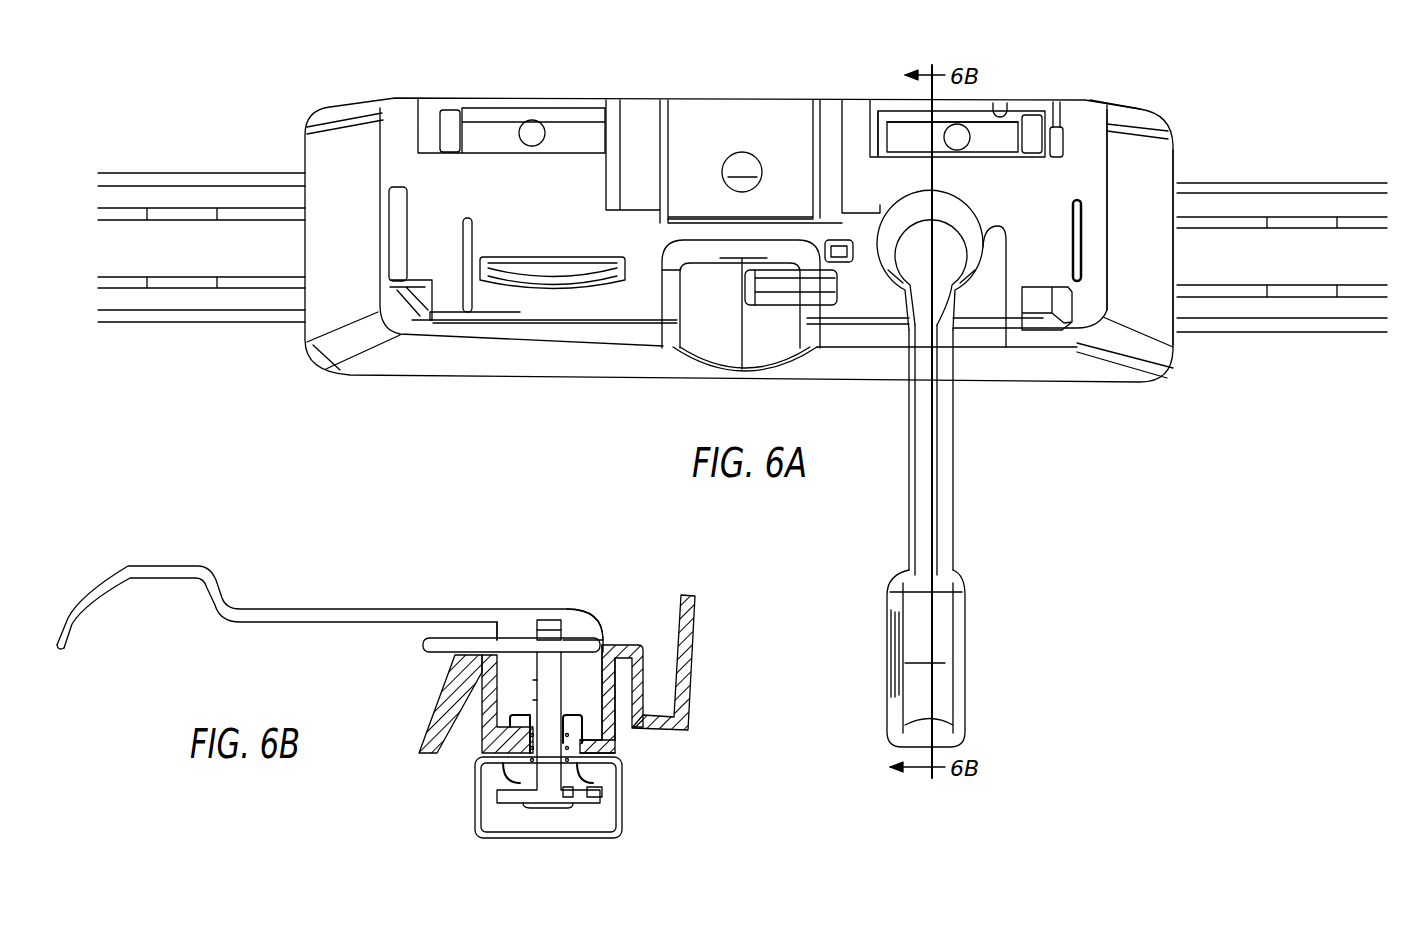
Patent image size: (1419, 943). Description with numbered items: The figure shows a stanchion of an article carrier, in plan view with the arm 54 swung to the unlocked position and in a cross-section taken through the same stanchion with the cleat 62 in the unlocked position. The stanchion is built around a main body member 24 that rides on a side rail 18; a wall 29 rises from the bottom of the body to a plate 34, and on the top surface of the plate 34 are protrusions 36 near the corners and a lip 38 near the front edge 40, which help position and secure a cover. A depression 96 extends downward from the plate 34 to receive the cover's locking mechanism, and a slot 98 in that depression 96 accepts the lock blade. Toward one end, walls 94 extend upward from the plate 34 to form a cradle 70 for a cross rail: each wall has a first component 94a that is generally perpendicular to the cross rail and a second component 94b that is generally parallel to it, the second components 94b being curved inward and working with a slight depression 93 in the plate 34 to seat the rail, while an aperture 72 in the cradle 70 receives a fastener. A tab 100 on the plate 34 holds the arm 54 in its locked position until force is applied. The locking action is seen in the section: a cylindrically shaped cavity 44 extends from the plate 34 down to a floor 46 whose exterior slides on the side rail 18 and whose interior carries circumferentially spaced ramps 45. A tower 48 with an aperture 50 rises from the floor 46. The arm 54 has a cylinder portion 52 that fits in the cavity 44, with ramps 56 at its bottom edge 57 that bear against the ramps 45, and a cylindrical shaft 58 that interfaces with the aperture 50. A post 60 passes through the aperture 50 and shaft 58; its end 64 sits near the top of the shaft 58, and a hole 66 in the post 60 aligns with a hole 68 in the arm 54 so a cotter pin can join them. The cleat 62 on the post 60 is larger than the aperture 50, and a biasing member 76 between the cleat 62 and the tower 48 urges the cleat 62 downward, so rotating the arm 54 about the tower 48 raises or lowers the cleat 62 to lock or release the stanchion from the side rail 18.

In FIG. 6A, the side rail 18 is at (1227, 172).
In FIG. 6B, the side rail 18 is at (623, 802).
In FIG. 6A, the main body member 24 is at (1140, 120).
In FIG. 6B, the main body member 24 is at (698, 617).
In FIG. 6A, the wall 29 is at (1157, 263).
In FIG. 6A, the plate 34 is at (1077, 150).
In FIG. 6A, the protrusions 36 is at (1040, 303).
In FIG. 6A, the lip 38 is at (527, 333).
In FIG. 6A, the front edge 40 is at (410, 355).
In FIG. 6B, the cylindrically shaped cavity 44 is at (500, 690).
In FIG. 6B, the ramps 45 is at (483, 737).
In FIG. 6B, the floor 46 is at (497, 757).
In FIG. 6B, the tower 48 is at (575, 718).
In FIG. 6B, the aperture 50 is at (640, 700).
In FIG. 6A, the cylinder portion 52 is at (1005, 347).
In FIG. 6B, the cylinder portion 52 is at (610, 670).
In FIG. 6A, the arm 54 is at (947, 488).
In FIG. 6B, the arm 54 is at (125, 573).
In FIG. 6B, the ramps 56 is at (570, 727).
In FIG. 6B, the bottom edge 57 is at (500, 737).
In FIG. 6B, the cylindrical shaft 58 is at (540, 686).
In FIG. 6B, the post 60 is at (552, 667).
In FIG. 6B, the cleat 62 is at (518, 790).
In FIG. 6B, the end 64 is at (545, 618).
In FIG. 6B, the hole 66 is at (588, 640).
In FIG. 6B, the hole 68 is at (530, 643).
In FIG. 6A, the cradle 70 is at (700, 128).
In FIG. 6A, the aperture 72 is at (742, 152).
In FIG. 6B, the biasing member 76 is at (552, 757).
In FIG. 6A, the depression 93 is at (782, 128).
In FIG. 6A, the walls 94 is at (1000, 113).
In FIG. 6A, the first component 94a is at (905, 112).
In FIG. 6A, the second component 94b is at (872, 122).
In FIG. 6A, the depression 96 is at (722, 338).
In FIG. 6A, the slot 98 is at (788, 288).
In FIG. 6A, the tab 100 is at (843, 238).